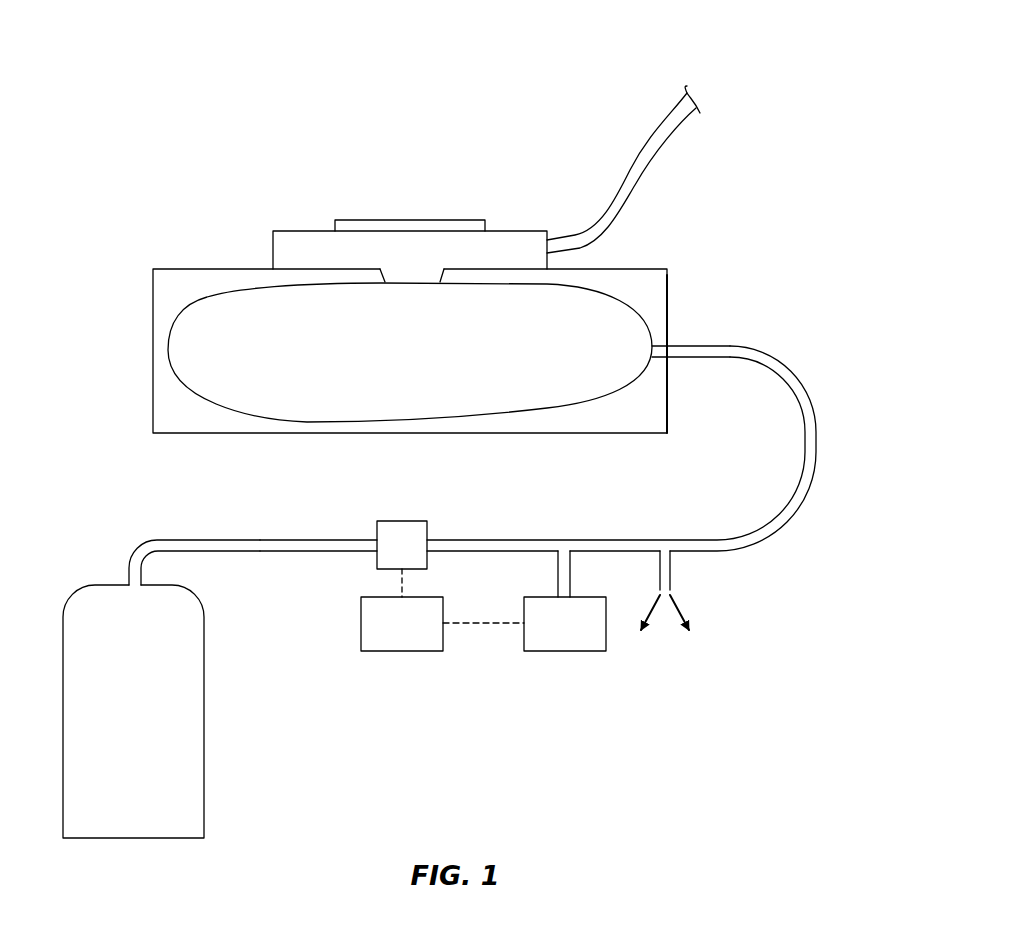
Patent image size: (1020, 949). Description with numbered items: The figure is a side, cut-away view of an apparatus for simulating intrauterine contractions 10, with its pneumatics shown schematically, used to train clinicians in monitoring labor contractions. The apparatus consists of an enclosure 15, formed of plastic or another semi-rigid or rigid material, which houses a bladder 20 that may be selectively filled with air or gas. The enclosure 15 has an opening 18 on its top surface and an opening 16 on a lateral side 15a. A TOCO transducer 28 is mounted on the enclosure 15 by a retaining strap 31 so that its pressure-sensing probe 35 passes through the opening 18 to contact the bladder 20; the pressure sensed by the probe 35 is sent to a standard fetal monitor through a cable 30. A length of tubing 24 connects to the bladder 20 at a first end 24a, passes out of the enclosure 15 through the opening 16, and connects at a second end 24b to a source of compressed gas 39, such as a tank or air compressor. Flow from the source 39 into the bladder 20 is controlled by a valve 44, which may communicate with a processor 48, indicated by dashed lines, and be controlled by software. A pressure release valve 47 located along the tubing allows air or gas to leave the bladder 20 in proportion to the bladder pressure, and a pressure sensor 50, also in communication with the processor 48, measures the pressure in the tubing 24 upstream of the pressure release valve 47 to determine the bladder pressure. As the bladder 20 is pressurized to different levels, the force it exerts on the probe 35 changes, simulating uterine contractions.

The apparatus for simulating intrauterine contractions 10 is at (735, 82).
The enclosure 15 is at (645, 268).
The lateral side 15a is at (674, 293).
The opening 16 is at (670, 357).
The opening 18 is at (463, 274).
The bladder 20 is at (215, 323).
The length of tubing 24 is at (818, 435).
The first end 24a is at (692, 341).
The second end 24b is at (164, 540).
The TOCO transducer 28 is at (290, 243).
The cable 30 is at (676, 103).
The retaining strap 31 is at (427, 219).
The pressure-sensing probe 35 is at (411, 275).
The source of compressed gas 39 is at (120, 715).
The valve 44 is at (392, 557).
The pressure release valve 47 is at (672, 568).
The processor 48 is at (391, 635).
The pressure sensor 50 is at (554, 635).